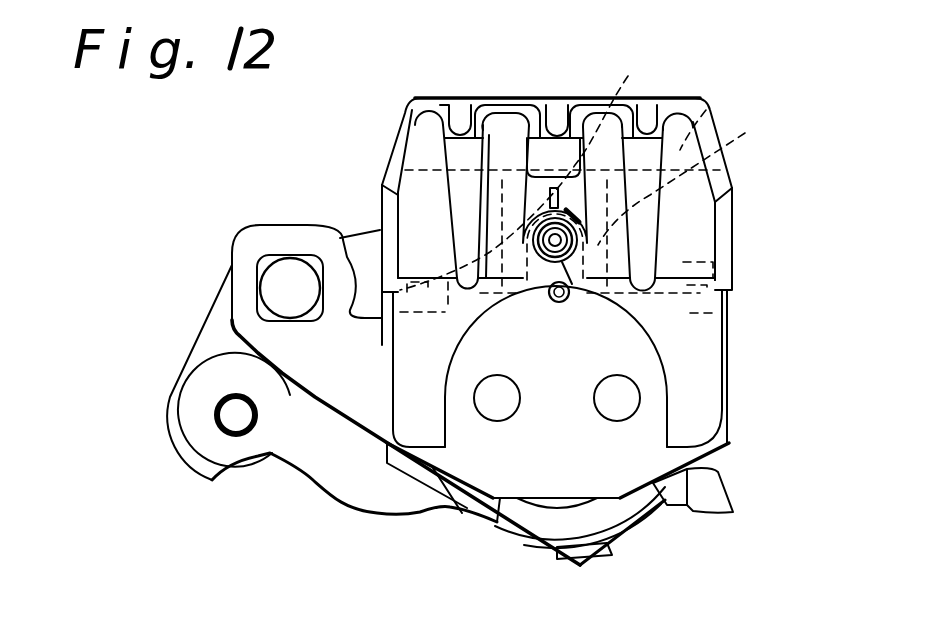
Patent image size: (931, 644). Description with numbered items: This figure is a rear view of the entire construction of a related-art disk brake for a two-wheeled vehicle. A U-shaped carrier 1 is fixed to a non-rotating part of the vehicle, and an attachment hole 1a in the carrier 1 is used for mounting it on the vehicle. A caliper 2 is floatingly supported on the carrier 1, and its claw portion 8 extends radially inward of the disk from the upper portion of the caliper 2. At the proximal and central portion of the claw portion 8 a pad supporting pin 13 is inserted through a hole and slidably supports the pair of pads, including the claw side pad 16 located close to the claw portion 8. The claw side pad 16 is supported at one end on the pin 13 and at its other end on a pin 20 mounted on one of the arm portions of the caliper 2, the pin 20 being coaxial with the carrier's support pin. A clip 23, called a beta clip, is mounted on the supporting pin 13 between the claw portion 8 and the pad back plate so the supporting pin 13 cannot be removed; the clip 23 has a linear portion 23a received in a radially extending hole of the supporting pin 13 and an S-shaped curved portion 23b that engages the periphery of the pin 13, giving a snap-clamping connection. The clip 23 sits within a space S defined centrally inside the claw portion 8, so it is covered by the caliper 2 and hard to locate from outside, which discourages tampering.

The carrier 1 is at (314, 478).
The attachment hole 1a is at (233, 420).
The caliper 2 is at (388, 131).
The claw portion 8 is at (690, 230).
The pad supporting pin 13 is at (540, 135).
The claw side pad 16 is at (497, 522).
The pin 20 is at (293, 290).
The clip 23 is at (580, 307).
The linear portion 23a is at (536, 170).
The S-shaped curved portion 23b is at (689, 175).
The space S is at (706, 110).